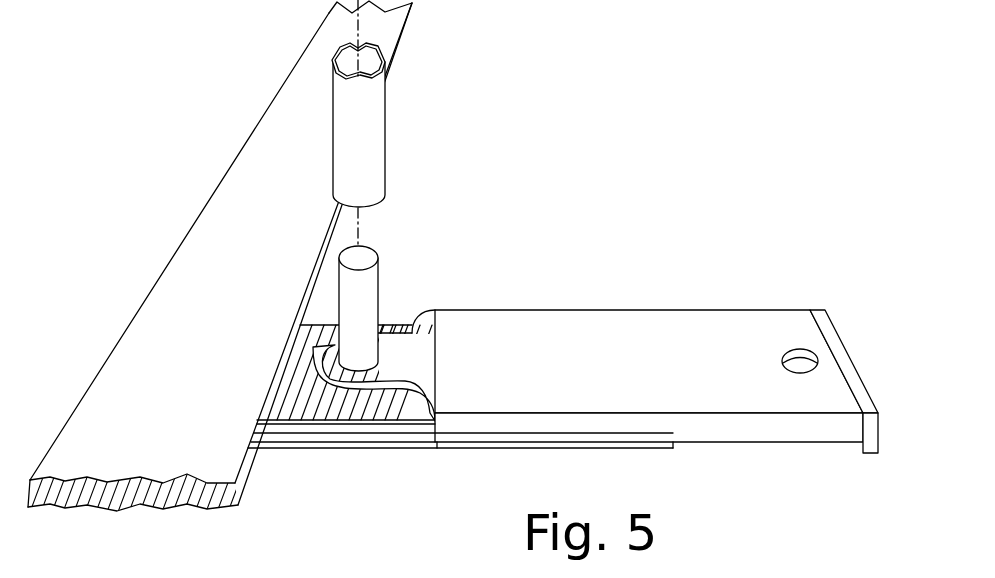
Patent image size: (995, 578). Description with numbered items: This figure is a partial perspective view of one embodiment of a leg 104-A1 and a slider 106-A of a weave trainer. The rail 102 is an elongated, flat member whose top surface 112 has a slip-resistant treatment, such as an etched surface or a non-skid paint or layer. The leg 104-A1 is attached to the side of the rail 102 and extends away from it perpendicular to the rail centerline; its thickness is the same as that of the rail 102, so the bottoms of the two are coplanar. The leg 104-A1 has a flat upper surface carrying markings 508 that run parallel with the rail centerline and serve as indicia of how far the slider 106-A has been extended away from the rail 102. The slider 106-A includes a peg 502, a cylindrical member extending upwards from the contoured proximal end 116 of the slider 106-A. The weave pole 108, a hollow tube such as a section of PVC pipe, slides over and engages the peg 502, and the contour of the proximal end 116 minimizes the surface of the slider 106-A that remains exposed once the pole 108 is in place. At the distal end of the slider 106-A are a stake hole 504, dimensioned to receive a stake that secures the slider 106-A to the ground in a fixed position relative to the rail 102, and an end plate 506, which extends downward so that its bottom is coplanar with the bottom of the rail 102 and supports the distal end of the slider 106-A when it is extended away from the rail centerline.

The rail 102 is at (206, 200).
The top surface 112 is at (293, 210).
The weave pole 108 is at (384, 173).
The peg 502 is at (379, 292).
The proximal end 116 is at (286, 354).
The markings 508 is at (283, 408).
The slider 106-A is at (713, 308).
The stake hole 504 is at (800, 348).
The end plate 506 is at (870, 453).
The leg 104-A1 is at (315, 450).